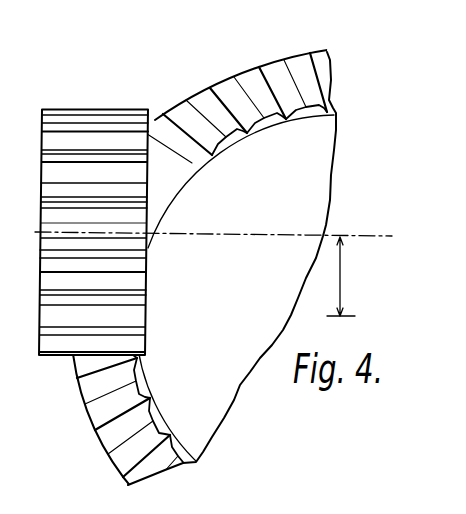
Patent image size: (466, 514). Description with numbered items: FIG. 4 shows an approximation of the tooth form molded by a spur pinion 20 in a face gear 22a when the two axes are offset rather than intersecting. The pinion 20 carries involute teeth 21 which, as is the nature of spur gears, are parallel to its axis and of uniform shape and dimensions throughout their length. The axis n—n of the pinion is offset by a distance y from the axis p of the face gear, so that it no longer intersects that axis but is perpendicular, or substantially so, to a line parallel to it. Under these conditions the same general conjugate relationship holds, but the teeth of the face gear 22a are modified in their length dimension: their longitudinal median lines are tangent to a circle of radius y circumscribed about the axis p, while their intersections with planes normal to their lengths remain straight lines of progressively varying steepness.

The spur pinion 20 is at (74, 208).
The involute teeth 21 is at (110, 162).
The face gear 22a is at (307, 168).
The axis of the pinion n is at (217, 238).
The offset distance y is at (335, 276).
The axis of the face gear p is at (344, 313).